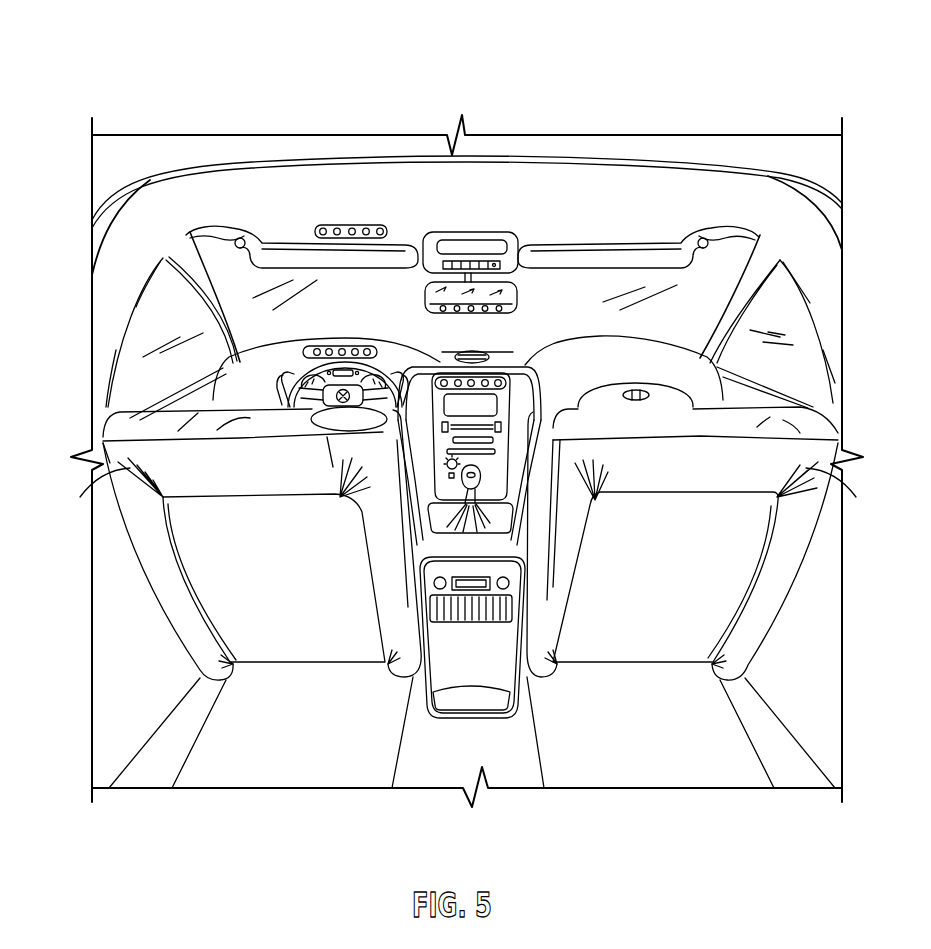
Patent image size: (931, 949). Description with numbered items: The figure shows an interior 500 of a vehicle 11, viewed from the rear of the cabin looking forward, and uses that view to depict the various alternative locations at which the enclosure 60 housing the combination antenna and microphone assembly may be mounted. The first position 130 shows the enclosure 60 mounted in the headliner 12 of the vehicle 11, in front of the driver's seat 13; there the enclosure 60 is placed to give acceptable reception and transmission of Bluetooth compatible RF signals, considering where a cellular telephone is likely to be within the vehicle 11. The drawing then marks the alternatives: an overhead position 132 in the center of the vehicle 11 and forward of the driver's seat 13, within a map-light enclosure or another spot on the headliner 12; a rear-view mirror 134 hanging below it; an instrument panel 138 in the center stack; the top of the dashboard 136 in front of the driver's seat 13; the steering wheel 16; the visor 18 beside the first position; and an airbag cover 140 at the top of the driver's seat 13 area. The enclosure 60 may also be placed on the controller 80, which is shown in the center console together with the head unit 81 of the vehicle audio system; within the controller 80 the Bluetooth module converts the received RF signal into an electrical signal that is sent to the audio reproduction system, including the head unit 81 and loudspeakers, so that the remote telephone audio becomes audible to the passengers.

The interior 500 is at (146, 52).
The vehicle 11 is at (624, 158).
The headliner 12 is at (493, 178).
The first position 130 is at (336, 202).
The visor 18 is at (282, 237).
The enclosure 60 is at (368, 226).
The overhead position 132 is at (503, 253).
The rear-view mirror 134 is at (512, 310).
The dashboard 136 is at (343, 338).
The steering wheel 16 is at (293, 373).
The instrument panel 138 is at (483, 381).
The head unit 81 is at (490, 402).
The controller 80 is at (493, 440).
The airbag cover 140 is at (240, 421).
The driver's seat 13 is at (272, 555).